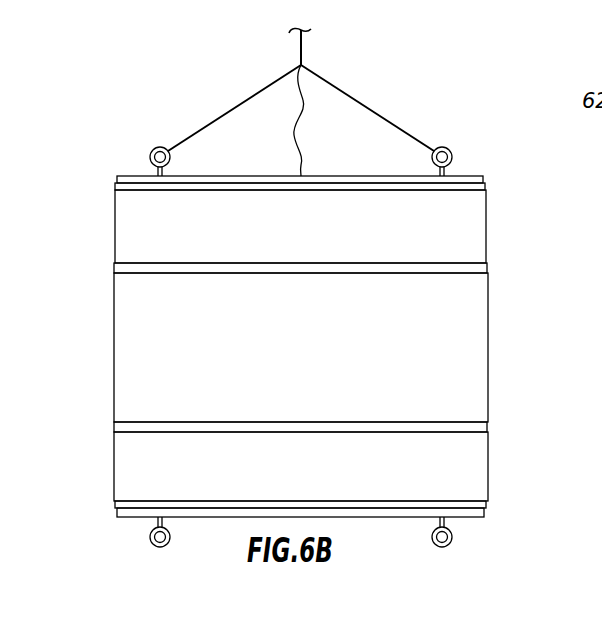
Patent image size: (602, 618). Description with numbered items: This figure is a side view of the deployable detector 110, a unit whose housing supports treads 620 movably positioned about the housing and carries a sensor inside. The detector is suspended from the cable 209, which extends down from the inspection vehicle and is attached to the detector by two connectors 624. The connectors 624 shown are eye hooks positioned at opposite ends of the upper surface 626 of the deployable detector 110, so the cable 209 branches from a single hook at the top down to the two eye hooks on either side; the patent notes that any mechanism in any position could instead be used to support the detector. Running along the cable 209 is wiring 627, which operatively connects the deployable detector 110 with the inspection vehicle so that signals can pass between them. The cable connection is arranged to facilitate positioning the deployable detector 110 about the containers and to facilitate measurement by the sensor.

The deployable detector 110 is at (317, 318).
The cable 209 is at (303, 46).
The treads 620 is at (488, 453).
The connectors 624 is at (153, 147).
The upper surface 626 is at (385, 175).
The wiring 627 is at (305, 111).